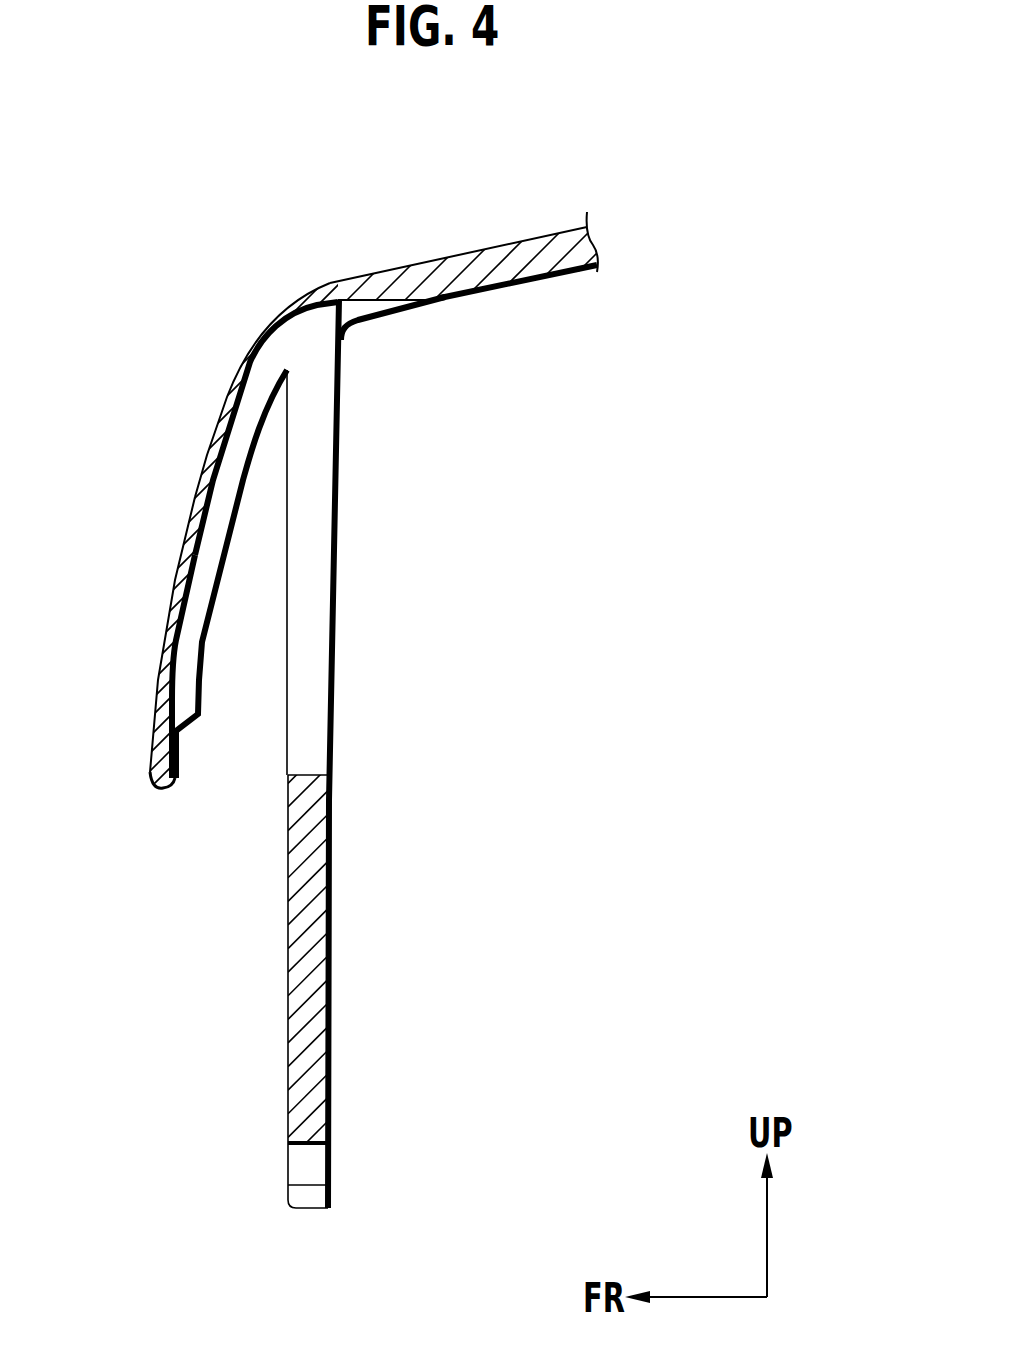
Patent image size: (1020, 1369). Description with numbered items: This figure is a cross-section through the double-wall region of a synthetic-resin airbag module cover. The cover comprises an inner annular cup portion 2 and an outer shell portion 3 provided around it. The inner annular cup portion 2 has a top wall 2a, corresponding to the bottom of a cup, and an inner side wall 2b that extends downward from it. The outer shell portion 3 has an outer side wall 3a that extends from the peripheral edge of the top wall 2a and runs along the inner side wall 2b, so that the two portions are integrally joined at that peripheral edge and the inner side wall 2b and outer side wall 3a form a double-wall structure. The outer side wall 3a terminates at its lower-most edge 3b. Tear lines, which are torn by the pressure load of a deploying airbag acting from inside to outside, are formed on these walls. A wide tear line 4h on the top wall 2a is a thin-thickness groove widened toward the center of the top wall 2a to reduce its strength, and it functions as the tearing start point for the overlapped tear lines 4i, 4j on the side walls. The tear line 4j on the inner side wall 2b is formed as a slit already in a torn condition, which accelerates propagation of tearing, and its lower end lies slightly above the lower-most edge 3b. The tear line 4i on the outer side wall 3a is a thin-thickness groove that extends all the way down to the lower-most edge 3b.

The inner annular cup portion 2 is at (425, 668).
The top wall 2a is at (527, 255).
The inner side wall 2b is at (302, 950).
The outer shell portion 3 is at (178, 492).
The outer side wall 3a is at (165, 618).
The lower-most edge 3b is at (156, 786).
The wide tear line 4h is at (373, 308).
The tear line 4i is at (188, 603).
The tear line 4j is at (318, 552).